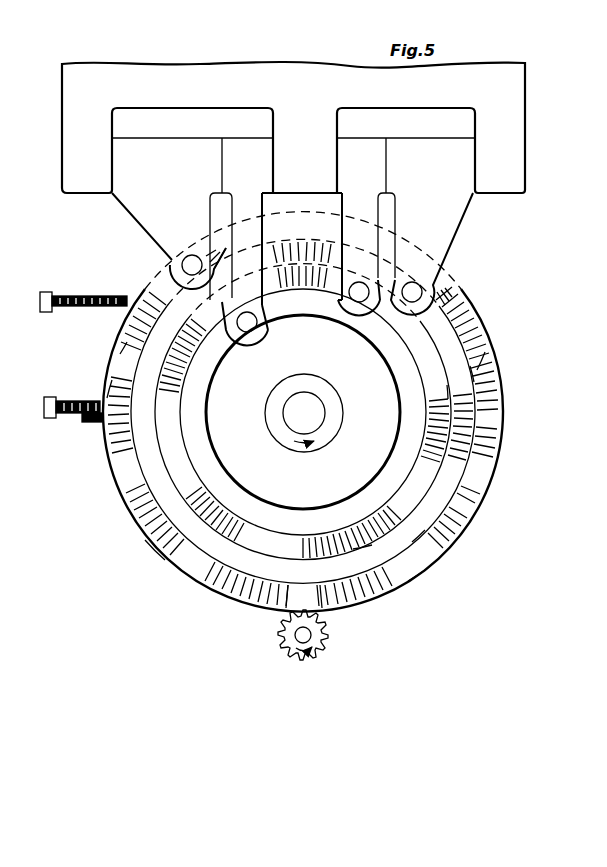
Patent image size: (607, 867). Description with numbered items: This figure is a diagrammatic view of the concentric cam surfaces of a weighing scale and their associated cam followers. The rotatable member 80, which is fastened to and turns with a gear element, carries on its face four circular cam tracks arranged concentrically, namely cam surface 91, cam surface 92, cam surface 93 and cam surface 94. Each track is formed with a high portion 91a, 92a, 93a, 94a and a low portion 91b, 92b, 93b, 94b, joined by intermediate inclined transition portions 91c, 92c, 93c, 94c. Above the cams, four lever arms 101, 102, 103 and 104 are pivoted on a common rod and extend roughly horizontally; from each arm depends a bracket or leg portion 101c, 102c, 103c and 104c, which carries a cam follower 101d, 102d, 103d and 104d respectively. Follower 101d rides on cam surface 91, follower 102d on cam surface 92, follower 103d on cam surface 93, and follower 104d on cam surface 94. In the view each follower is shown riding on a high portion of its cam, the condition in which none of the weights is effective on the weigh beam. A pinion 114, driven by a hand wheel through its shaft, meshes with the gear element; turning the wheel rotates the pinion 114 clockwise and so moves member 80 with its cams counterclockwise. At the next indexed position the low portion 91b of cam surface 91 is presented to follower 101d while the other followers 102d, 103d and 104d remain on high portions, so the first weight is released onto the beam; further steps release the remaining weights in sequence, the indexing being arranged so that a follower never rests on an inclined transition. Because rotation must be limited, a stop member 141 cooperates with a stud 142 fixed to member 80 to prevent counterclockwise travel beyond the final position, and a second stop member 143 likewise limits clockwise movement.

The member 80 is at (402, 598).
The circular cam surface 91 is at (128, 324).
The high portion 91a is at (168, 242).
The low portion 91b is at (120, 350).
The inclined transition portion 91c is at (108, 452).
The circular cam surface 92 is at (207, 466).
The high portion 92a is at (380, 486).
The low portion 92b is at (228, 486).
The inclined transition portion 92c is at (262, 356).
The circular cam surface 93 is at (252, 566).
The high portion 93a is at (456, 422).
The low portion 93b is at (360, 600).
The inclined transition portion 93c is at (185, 560).
The circular cam surface 94 is at (472, 364).
The high portion 94a is at (462, 384).
The low portion 94b is at (442, 530).
The inclined transition portion 94c is at (310, 292).
The lever arm 101 is at (136, 134).
The bracket or leg portion 101c is at (150, 222).
The cam follower 101d is at (182, 262).
The lever arm 102 is at (244, 134).
The bracket or leg portion 102c is at (170, 283).
The cam follower 102d is at (256, 330).
The lever arm 103 is at (350, 134).
The bracket or leg portion 103c is at (358, 218).
The cam follower 103d is at (355, 302).
The lever arm 104 is at (462, 152).
The bracket or leg portion 104c is at (455, 232).
The cam follower 104d is at (420, 290).
The pinion 114 is at (298, 658).
The stop member 141 is at (82, 293).
The stud 142 is at (90, 423).
The stop member 143 is at (76, 402).